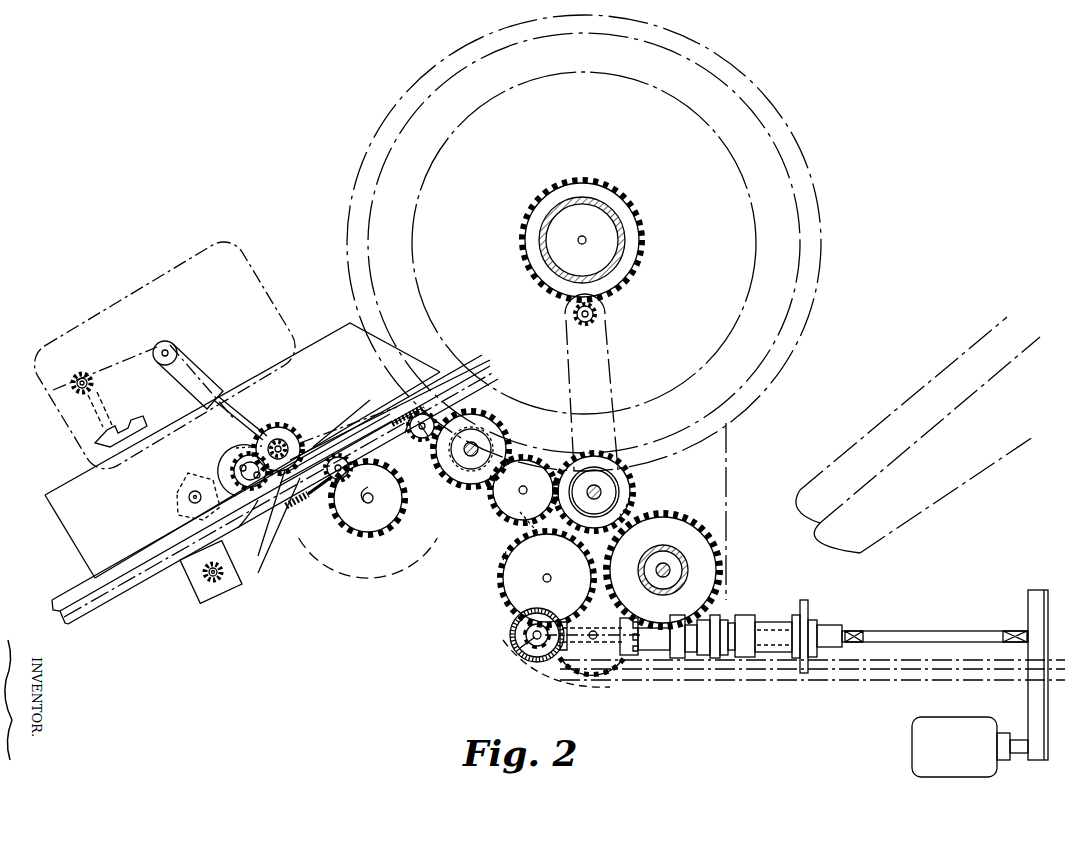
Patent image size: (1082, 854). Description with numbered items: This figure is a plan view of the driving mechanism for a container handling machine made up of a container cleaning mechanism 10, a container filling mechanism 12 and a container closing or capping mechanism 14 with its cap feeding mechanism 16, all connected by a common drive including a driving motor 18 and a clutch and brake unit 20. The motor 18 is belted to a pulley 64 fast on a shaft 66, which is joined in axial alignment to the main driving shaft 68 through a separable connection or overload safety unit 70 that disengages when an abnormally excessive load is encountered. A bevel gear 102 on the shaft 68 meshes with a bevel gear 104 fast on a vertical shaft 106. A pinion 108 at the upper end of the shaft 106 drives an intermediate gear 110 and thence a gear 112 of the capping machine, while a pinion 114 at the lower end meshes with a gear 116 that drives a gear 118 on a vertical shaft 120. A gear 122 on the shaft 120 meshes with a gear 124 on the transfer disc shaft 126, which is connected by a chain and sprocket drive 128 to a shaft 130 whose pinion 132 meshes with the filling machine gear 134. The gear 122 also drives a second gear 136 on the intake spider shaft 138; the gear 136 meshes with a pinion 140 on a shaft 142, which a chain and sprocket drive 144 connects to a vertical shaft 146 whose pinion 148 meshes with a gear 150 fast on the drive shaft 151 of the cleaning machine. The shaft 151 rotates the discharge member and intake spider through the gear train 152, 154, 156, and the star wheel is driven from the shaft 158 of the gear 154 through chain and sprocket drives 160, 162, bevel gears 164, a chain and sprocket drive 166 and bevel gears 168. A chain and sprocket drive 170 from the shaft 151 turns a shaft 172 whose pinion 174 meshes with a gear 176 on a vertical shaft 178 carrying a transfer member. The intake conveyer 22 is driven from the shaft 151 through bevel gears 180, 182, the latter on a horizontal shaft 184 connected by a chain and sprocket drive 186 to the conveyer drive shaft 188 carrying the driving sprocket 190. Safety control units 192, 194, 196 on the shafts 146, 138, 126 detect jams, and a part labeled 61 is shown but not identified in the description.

The container cleaning mechanism 10 is at (80, 306).
The container filling mechanism 12 is at (385, 96).
The container closing or capping mechanism 14 is at (713, 512).
The cap feeding mechanism 16 is at (884, 424).
The driving motor 18 is at (912, 752).
The clutch and brake unit 20 is at (721, 668).
The intake conveyer 22 is at (121, 600).
The guide rods 61 is at (833, 686).
The pulley 64 is at (1031, 596).
The shaft 66 is at (942, 631).
The main driving shaft 68 is at (770, 612).
The overload safety unit 70 is at (818, 594).
The bevel gear 102 is at (582, 630).
The bevel gear 104 is at (533, 650).
The vertical shaft 106 is at (530, 640).
The pinion 108 is at (512, 638).
The intermediate gear 110 is at (618, 662).
The gear 112 is at (721, 548).
The pinion 114 is at (489, 643).
The gear 116 is at (508, 602).
The gear 118 is at (506, 552).
The vertical shaft 120 is at (519, 492).
The gear 122 is at (507, 527).
The gear 124 is at (636, 498).
The vertical shaft 126 is at (598, 492).
The chain and sprocket drive 128 is at (610, 373).
The shaft 130 is at (602, 322).
The pinion 132 is at (604, 316).
The gear 134 is at (643, 222).
The second gear 136 is at (492, 424).
The shaft 138 is at (478, 440).
The pinion 140 is at (407, 401).
The shaft 142 is at (437, 423).
The chain and sprocket drive 144 is at (395, 420).
The vertical shaft 146 is at (228, 520).
The pinion 148 is at (234, 418).
The gear 150 is at (272, 438).
The drive shaft 151 is at (288, 436).
The gear 152 is at (281, 438).
The gear 154 is at (233, 469).
The gear 156 is at (176, 503).
The shaft 158 is at (190, 481).
The chain and sprocket drive 160 is at (195, 352).
The chain and sprocket drive 162 is at (120, 358).
The bevel gears 164 is at (70, 386).
The chain and sprocket drive 166 is at (96, 438).
The bevel gears 168 is at (208, 582).
The chain and sprocket drive 170 is at (298, 442).
The shaft 172 is at (368, 498).
The pinion 174 is at (346, 455).
The gear 176 is at (356, 562).
The vertical shaft 178 is at (352, 510).
The bevel gear 180 is at (274, 517).
The bevel gear 182 is at (279, 530).
The horizontal shaft 184 is at (292, 507).
The chain and sprocket drive 186 is at (353, 468).
The drive shaft 188 is at (413, 415).
The driving sprocket 190 is at (422, 422).
The safety control unit 192 is at (242, 449).
The second safety control unit 194 is at (503, 438).
The third safety control unit 196 is at (616, 475).